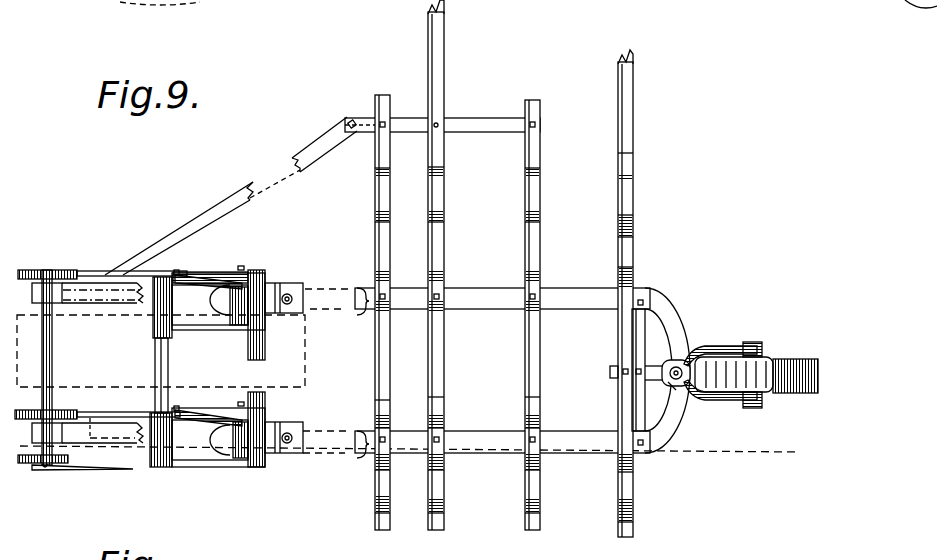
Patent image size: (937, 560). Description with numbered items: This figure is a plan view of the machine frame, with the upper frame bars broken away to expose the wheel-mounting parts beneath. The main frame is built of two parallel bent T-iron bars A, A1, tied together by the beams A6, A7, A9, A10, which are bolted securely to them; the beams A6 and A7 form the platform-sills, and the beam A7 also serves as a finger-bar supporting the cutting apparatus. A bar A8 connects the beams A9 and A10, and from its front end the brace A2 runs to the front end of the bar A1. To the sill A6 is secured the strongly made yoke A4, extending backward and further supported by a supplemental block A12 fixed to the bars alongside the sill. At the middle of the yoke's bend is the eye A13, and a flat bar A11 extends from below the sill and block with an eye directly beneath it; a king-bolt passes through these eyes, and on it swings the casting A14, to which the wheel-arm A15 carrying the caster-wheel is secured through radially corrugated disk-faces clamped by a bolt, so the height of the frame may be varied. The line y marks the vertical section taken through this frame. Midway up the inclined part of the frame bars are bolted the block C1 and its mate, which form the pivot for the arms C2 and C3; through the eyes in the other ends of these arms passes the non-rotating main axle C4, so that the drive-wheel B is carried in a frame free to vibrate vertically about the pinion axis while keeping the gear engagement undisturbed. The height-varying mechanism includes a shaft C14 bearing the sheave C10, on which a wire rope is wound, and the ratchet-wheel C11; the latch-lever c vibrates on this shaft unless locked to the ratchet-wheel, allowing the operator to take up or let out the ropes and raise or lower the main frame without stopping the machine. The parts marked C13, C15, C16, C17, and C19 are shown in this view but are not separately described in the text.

The frame bar A is at (476, 443).
The frame bar A1 is at (477, 301).
The brace A2 is at (293, 158).
The yoke A4 is at (657, 316).
The beam (platform-sill) A6 is at (630, 293).
The beam (platform-sill and finger-bar) A7 is at (446, 265).
The connecting bar A8 is at (442, 114).
The beam A9 is at (389, 312).
The beam A10 is at (539, 315).
The flat bar A11 is at (667, 367).
The supplemental block A12 is at (668, 386).
The eye A13 is at (686, 347).
The casting A14 is at (688, 396).
The wheel-arm A15 is at (716, 345).
The drive-wheel (traction-wheel) B is at (161, 351).
The block C1 is at (291, 358).
The arm C2 is at (195, 439).
The arm C3 is at (92, 277).
The main axle C4 is at (168, 372).
The sheave C10 is at (102, 275).
The ratchet-wheel C11 is at (31, 465).
The frame block C13 is at (218, 358).
The shaft C14 is at (62, 367).
The upper pawl C15 is at (184, 277).
The lower pawl C16 is at (180, 410).
The lower arm C17 is at (87, 418).
The lower rack bar C19 is at (97, 406).
The latch-lever c is at (82, 475).
The section line y is at (410, 429).